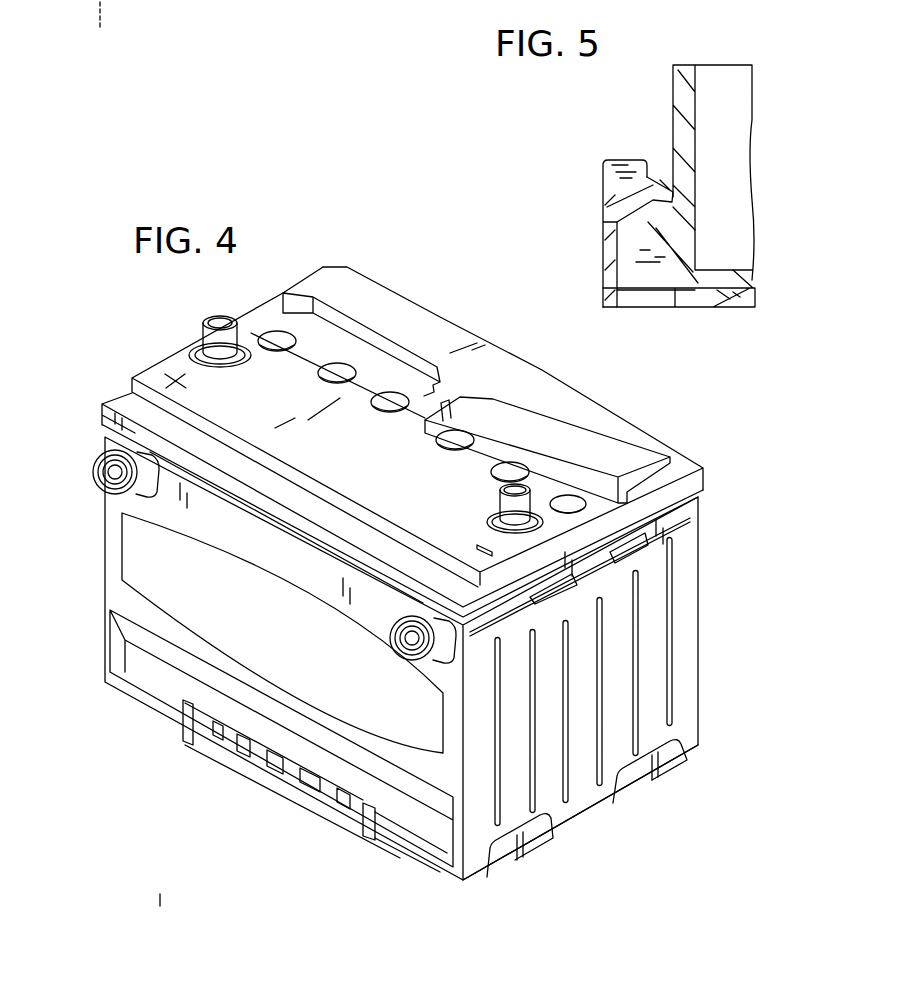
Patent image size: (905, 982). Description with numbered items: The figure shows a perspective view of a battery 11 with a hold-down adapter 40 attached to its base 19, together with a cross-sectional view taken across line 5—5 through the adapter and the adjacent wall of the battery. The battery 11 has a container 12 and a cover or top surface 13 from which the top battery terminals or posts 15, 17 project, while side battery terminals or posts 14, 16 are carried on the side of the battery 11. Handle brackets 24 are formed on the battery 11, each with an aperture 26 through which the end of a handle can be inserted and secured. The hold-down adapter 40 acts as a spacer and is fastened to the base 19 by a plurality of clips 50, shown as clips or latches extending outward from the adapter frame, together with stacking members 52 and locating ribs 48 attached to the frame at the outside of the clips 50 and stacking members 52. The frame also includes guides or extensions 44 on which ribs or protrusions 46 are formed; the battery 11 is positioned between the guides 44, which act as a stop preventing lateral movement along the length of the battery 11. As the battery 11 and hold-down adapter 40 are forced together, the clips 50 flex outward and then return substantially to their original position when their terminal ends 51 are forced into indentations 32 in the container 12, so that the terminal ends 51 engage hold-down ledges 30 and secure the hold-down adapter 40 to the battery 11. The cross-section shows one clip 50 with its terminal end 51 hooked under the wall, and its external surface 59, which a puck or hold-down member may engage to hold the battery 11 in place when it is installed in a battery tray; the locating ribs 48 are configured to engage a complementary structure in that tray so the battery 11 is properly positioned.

In FIG. 4, the battery 11 is at (700, 611).
In FIG. 4, the battery container 12 is at (683, 692).
In FIG. 5, the battery container 12 is at (676, 95).
In FIG. 4, the cover 13 is at (637, 455).
In FIG. 4, the side battery terminal 14 is at (100, 468).
In FIG. 4, the battery terminal 15 is at (213, 345).
In FIG. 4, the side battery terminal 16 is at (396, 655).
In FIG. 4, the battery terminal 17 is at (508, 513).
In FIG. 4, the base 19 is at (587, 813).
In FIG. 4, the handle bracket 24 is at (593, 580).
In FIG. 4, the aperture 26 is at (612, 565).
In FIG. 4, the hold-down ledge 30 is at (420, 857).
In FIG. 4, the indentation 32 is at (150, 662).
In FIG. 5, the hold-down adapter 40 is at (697, 314).
In FIG. 4, the guide 44 is at (540, 835).
In FIG. 4, the rib 46 is at (523, 852).
In FIG. 4, the locating rib 48 is at (180, 728).
In FIG. 5, the locating rib 48 is at (612, 162).
In FIG. 4, the clip 50 is at (215, 740).
In FIG. 5, the clip 50 is at (610, 262).
In FIG. 5, the terminal end 51 is at (660, 175).
In FIG. 4, the stacking member 52 is at (233, 753).
In FIG. 5, the external surface 59 is at (610, 190).
In FIG. 4, the section line 5 is at (296, 745).